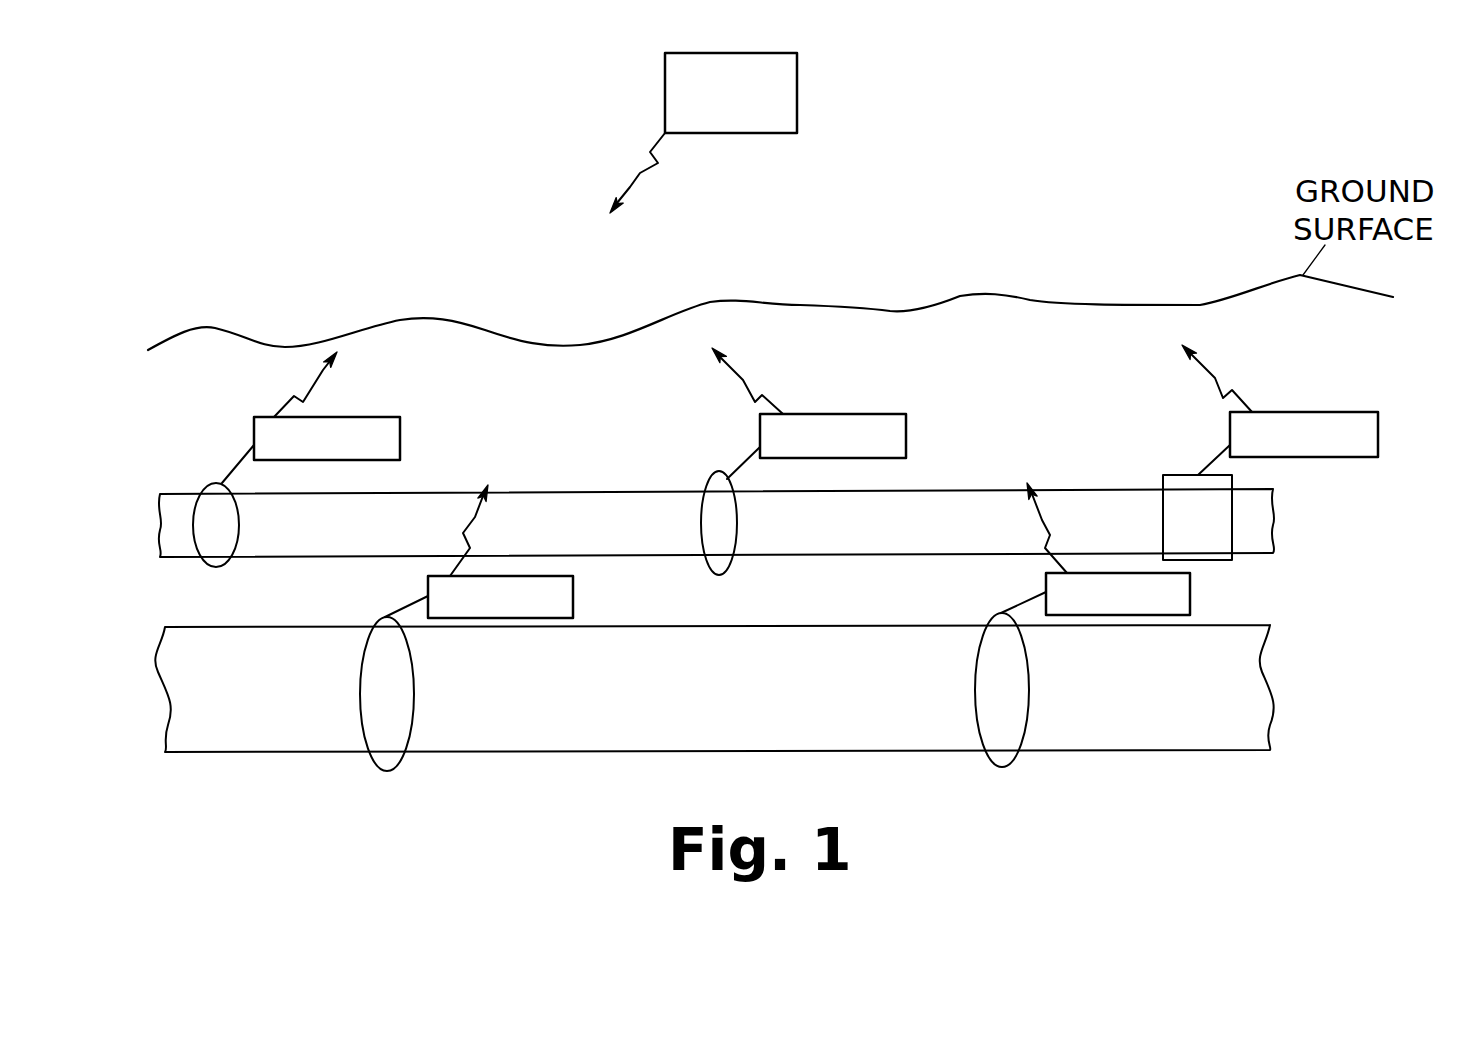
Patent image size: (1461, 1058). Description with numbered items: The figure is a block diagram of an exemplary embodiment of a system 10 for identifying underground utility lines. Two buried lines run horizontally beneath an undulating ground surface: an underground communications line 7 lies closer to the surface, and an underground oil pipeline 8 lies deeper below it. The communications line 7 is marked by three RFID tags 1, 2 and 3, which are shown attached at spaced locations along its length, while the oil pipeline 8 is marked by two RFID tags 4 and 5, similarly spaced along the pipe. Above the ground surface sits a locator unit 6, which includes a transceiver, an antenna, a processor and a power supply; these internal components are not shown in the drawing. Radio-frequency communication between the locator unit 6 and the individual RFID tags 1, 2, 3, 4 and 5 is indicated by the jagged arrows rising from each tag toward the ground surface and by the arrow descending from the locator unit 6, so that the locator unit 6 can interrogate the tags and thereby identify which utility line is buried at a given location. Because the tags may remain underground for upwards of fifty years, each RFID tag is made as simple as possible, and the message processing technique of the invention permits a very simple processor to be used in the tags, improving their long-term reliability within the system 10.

The RFID tag 1 is at (400, 426).
The RFID tag 2 is at (906, 422).
The RFID tag 3 is at (1378, 420).
The RFID tag 4 is at (573, 597).
The RFID tag 5 is at (1190, 595).
The locator unit 6 is at (797, 88).
The underground communications line 7 is at (763, 553).
The underground oil pipeline 8 is at (493, 752).
The system 10 is at (1036, 821).